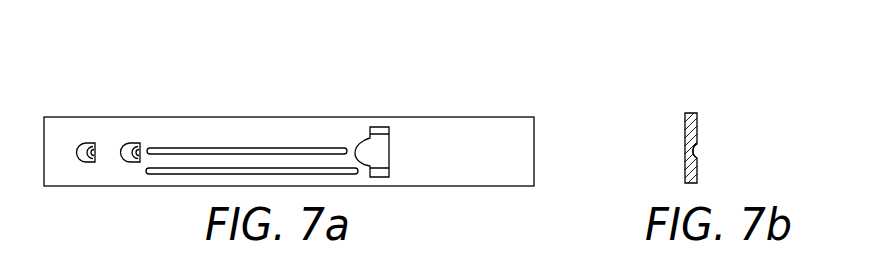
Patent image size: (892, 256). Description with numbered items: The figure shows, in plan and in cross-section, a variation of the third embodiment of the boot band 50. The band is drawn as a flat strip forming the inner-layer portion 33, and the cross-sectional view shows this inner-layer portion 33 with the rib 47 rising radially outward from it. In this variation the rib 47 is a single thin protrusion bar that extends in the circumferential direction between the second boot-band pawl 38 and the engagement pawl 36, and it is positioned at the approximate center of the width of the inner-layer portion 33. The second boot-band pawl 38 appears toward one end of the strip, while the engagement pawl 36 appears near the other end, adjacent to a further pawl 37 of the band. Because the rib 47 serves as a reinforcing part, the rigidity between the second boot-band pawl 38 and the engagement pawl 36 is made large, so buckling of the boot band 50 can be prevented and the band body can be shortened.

In FIG. 7a, the boot band 50 is at (541, 104).
In FIG. 7a, the first pin 37 is at (93, 144).
In FIG. 7a, the engagement pawl 36 is at (137, 144).
In FIG. 7a, the rib 47 is at (237, 148).
In FIG. 7b, the rib 47 is at (698, 152).
In FIG. 7a, the second boot-band pawl 38 is at (377, 153).
In FIG. 7b, the inner-layer portion 33 is at (698, 118).